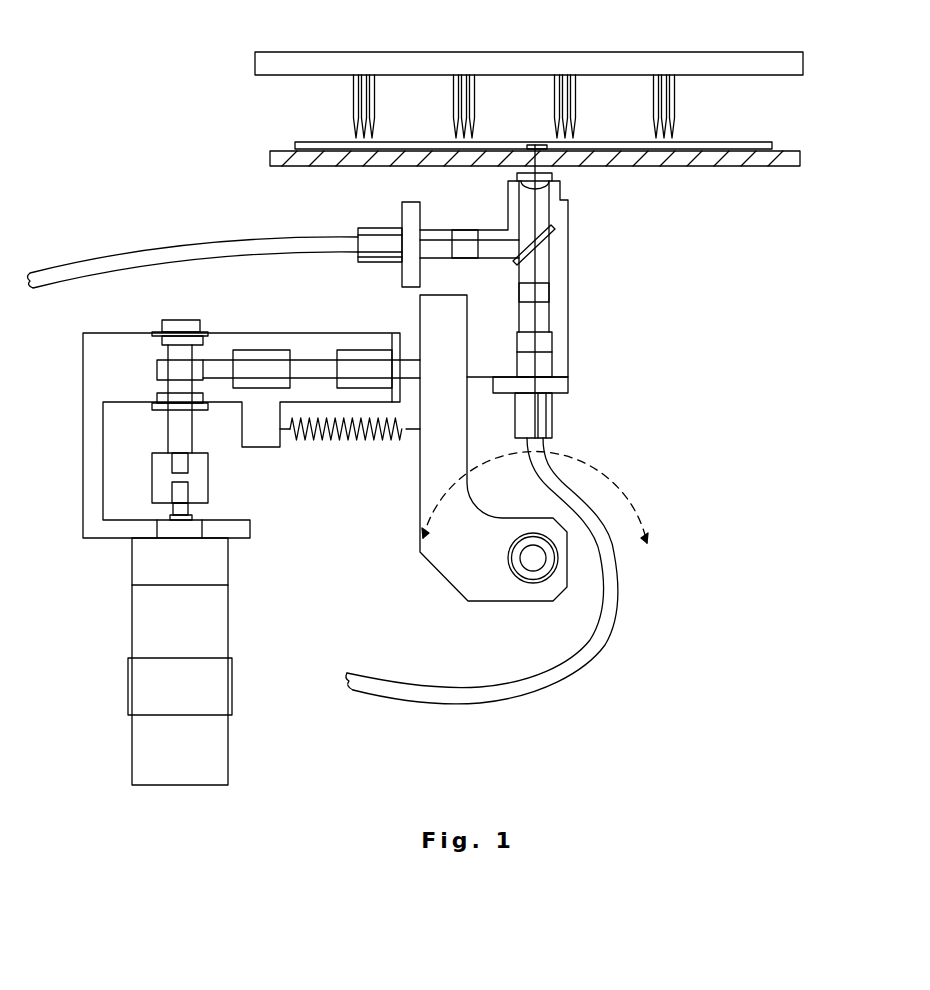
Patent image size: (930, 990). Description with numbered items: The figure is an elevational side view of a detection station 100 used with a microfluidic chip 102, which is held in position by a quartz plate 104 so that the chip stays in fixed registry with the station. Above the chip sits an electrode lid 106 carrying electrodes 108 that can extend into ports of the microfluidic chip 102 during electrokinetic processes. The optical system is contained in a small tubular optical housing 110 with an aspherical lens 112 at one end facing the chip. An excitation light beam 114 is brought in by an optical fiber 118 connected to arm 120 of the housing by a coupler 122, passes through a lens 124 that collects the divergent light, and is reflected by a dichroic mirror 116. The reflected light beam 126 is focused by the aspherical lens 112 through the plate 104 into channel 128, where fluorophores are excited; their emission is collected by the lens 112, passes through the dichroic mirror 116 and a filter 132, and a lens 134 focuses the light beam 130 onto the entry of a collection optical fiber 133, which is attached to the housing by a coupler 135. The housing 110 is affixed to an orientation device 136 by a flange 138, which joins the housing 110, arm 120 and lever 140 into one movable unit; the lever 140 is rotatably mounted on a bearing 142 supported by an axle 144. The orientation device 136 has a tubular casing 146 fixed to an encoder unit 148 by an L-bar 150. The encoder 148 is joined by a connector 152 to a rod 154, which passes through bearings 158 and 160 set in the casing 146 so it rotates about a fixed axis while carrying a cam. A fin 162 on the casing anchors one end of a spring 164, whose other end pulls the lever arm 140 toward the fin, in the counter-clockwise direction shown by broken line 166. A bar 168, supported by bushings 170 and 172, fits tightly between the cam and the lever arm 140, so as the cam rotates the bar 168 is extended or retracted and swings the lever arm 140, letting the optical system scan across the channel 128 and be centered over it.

The detection station 100 is at (712, 342).
The microfluidic chip 102 is at (745, 147).
The quartz plate 104 is at (763, 168).
The electrode lid 106 is at (803, 63).
The electrodes 108 is at (675, 103).
The optical housing 110 is at (569, 337).
The aspherical lens 112 is at (553, 178).
The excitation light beam 114 is at (505, 240).
The dichroic mirror 116 is at (556, 235).
The hose 118 is at (145, 252).
The arm 120 is at (427, 207).
The coupler 122 is at (370, 232).
The lens 124 is at (460, 237).
The reflected light beam 126 is at (539, 210).
The channel 128 is at (536, 146).
The light beam 130 is at (541, 315).
The filter 132 is at (544, 295).
The tube 133 is at (547, 691).
The lens 134 is at (551, 343).
The fitting 135 is at (553, 415).
The orientation device 136 is at (357, 502).
The flange 138 is at (490, 313).
The lever 140 is at (450, 577).
The bearing 142 is at (532, 572).
The axle 144 is at (546, 559).
The tubular casing 146 is at (120, 333).
The encoder unit 148 is at (140, 632).
The L-bar 150 is at (92, 430).
The connector 152 is at (206, 495).
The rod 154 is at (168, 428).
The anchor tab 158 is at (206, 413).
The bearing 160 is at (160, 338).
The fin 162 is at (272, 443).
The spring 164 is at (372, 443).
The broken line 166 is at (610, 482).
The bar 168 is at (308, 363).
The bushing 170 is at (242, 355).
The bushing 172 is at (355, 353).